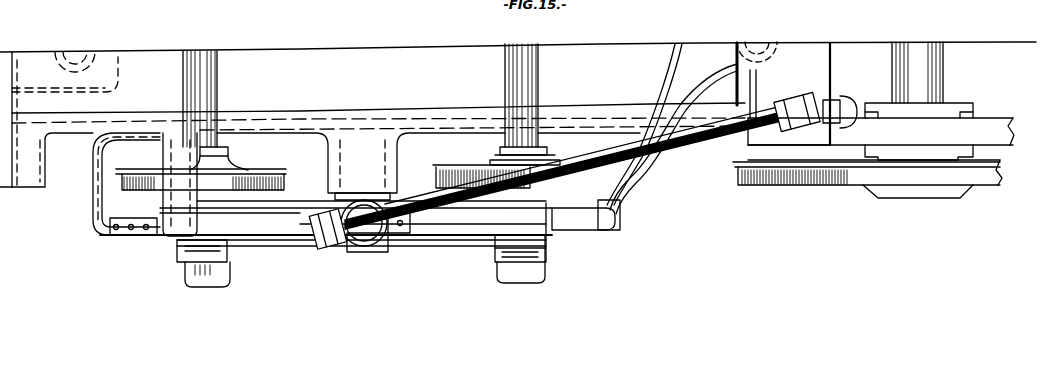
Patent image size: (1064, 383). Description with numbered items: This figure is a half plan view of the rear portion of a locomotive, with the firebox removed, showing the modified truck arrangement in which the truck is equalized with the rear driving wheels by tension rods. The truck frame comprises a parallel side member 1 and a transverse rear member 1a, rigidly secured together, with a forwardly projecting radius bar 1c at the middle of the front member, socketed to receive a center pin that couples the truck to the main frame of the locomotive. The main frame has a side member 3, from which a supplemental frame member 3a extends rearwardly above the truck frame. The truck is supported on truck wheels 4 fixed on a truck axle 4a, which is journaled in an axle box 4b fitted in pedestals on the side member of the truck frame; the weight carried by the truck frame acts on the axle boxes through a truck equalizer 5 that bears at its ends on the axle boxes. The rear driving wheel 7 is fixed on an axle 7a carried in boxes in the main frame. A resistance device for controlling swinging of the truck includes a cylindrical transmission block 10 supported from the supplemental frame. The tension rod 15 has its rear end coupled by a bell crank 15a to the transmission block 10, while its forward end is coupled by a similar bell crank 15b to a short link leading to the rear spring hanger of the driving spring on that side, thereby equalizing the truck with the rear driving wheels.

The side member 1 is at (272, 227).
The transverse rear member 1a is at (100, 183).
The radius bar 1c is at (725, 49).
The side member of main frame 3 is at (978, 127).
The supplemental frame member 3a is at (452, 112).
The truck wheel 4 is at (228, 160).
The truck axle 4a is at (207, 72).
The axle box 4b is at (183, 268).
The truck equalizer 5 is at (447, 236).
The rear driving wheel 7 is at (830, 172).
The axle 7a is at (920, 58).
The transmission block 10 is at (376, 246).
The tension rod 15 is at (663, 142).
The bell crank 15a is at (330, 249).
The bell crank 15b is at (815, 105).